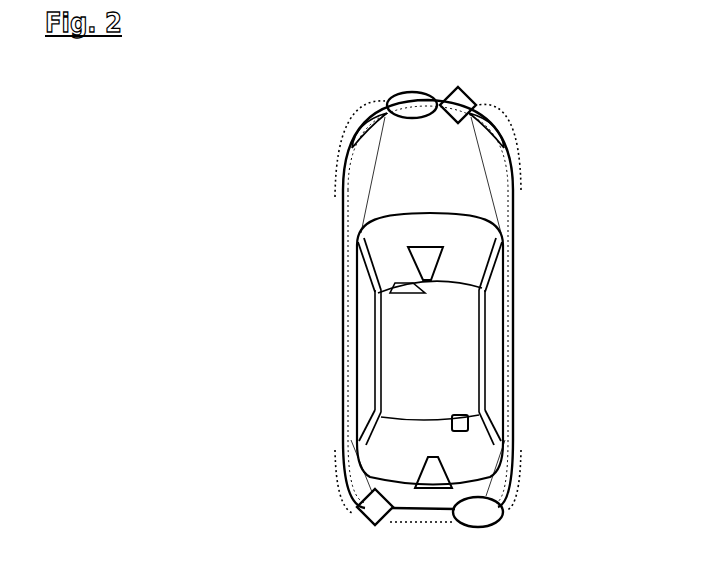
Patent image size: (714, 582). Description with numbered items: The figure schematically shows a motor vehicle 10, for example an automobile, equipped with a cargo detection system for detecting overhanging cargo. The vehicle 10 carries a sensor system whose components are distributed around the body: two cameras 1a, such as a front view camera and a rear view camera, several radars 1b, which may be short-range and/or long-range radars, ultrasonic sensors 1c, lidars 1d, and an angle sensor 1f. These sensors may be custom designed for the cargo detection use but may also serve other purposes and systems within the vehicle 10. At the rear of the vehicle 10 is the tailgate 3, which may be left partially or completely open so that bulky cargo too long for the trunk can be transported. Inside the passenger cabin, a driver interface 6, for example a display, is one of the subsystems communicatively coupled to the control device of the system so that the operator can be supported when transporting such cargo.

The motor vehicle 10 is at (274, 191).
The camera 1a is at (435, 268).
The radar 1b is at (450, 95).
The ultrasonic sensor 1c is at (528, 143).
The lidar 1d is at (403, 92).
The angle sensor 1f is at (459, 415).
The tailgate 3 is at (472, 452).
The driver interface 6 is at (395, 288).